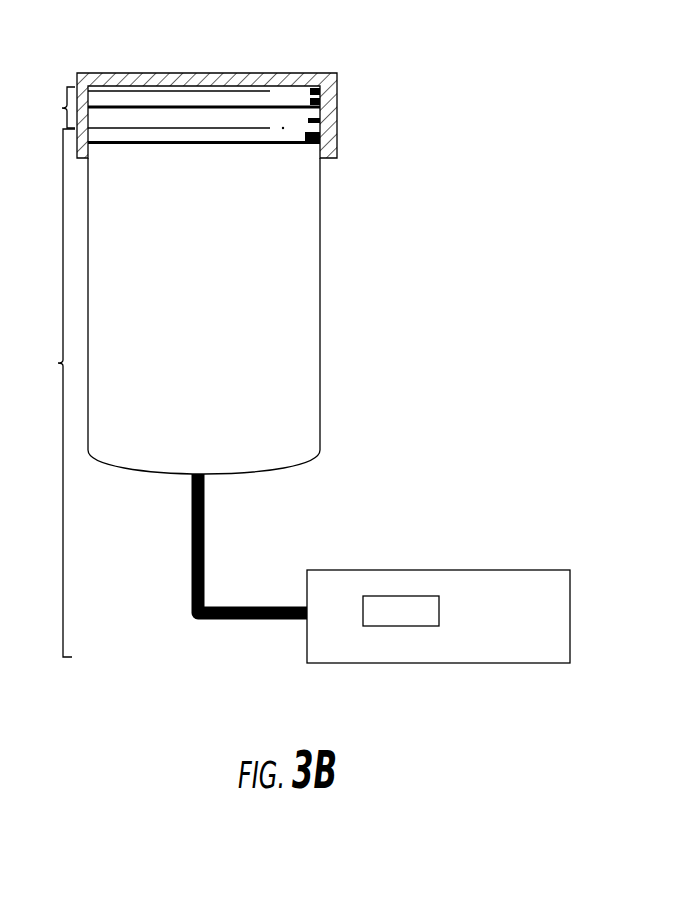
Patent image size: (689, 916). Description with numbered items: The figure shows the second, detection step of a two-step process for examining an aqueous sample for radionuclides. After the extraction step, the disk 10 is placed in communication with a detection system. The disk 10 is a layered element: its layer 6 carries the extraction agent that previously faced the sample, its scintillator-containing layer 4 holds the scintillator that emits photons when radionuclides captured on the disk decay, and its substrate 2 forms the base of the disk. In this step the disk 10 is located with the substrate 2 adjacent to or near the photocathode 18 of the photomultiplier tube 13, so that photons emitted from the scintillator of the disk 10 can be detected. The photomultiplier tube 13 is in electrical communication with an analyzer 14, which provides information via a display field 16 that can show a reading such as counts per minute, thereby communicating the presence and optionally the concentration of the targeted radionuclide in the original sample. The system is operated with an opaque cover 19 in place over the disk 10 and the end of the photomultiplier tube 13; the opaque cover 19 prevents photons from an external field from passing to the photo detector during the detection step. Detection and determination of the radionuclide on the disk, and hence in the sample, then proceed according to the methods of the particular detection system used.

The opaque cover 19 is at (88, 65).
The layer 6 is at (320, 88).
The scintillator-containing layer 4 is at (323, 102).
The substrate 2 is at (328, 118).
The photocathode 18 is at (327, 143).
The disk 10 is at (52, 126).
The photomultiplier tube 13 is at (298, 399).
The analyzer 14 is at (523, 629).
The display field 16 is at (428, 543).